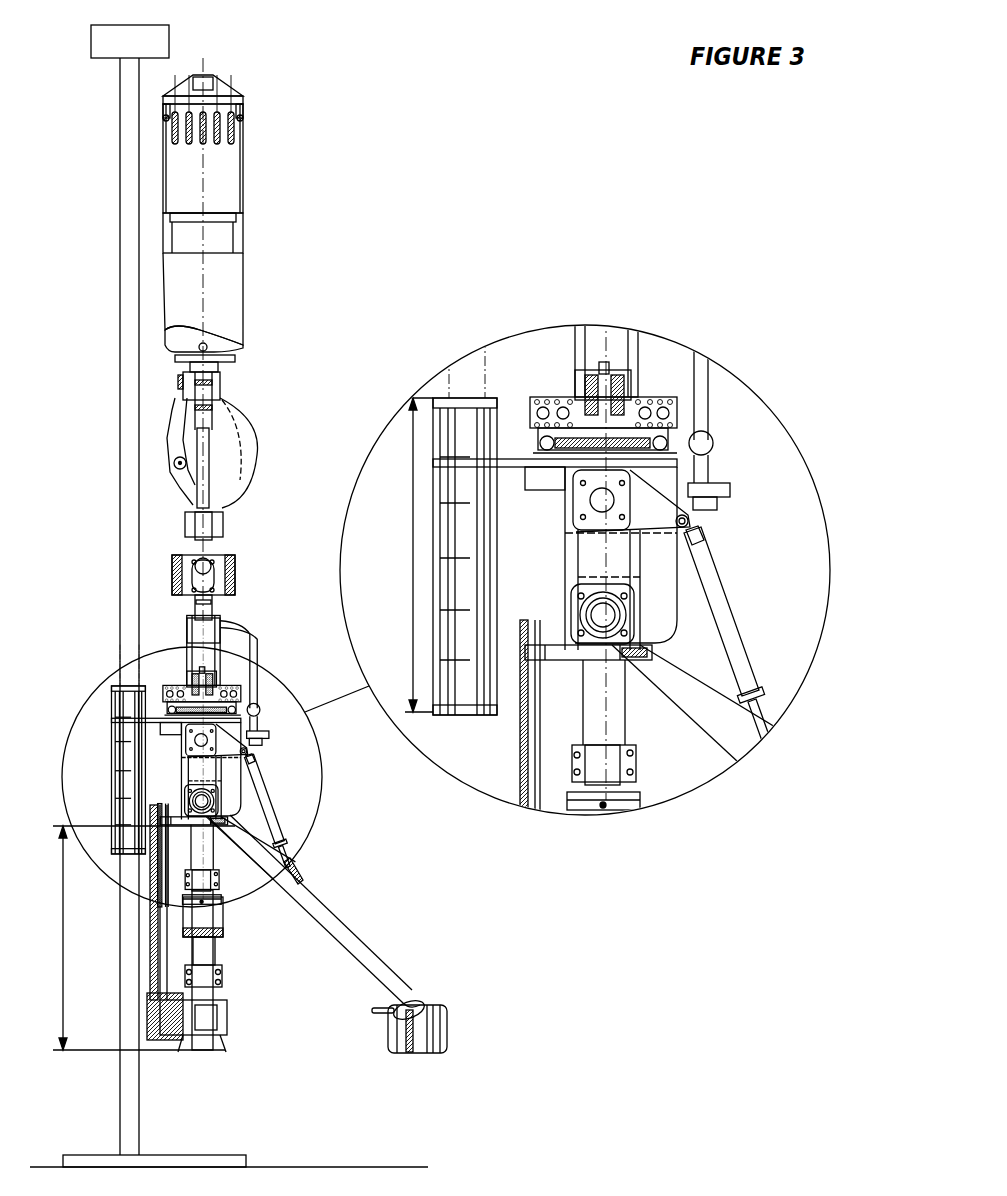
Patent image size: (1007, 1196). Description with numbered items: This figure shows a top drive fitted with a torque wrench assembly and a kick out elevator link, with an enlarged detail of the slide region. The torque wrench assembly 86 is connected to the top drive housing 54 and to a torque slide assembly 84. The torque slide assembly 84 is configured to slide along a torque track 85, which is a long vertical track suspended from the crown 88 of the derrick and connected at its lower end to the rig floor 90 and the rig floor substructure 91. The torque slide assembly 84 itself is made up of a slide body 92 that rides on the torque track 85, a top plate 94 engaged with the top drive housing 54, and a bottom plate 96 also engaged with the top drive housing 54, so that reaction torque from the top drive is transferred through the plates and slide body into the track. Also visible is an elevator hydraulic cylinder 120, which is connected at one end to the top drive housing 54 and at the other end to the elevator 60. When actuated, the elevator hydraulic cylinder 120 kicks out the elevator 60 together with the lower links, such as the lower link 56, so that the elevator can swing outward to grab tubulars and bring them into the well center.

The top drive housing 54 is at (655, 556).
The lower link 56 is at (337, 935).
The elevator 60 is at (443, 1013).
The torque slide assembly 84 is at (418, 555).
The torque track 85 is at (120, 367).
The torque wrench assembly 86 is at (143, 938).
The crown 88 is at (91, 42).
The rig floor 90 is at (75, 1156).
The rig floor substructure 91 is at (328, 1167).
The slide body 92 is at (498, 400).
The top plate 94 is at (506, 461).
The bottom plate 96 is at (552, 655).
The elevator hydraulic cylinder 120 is at (725, 620).